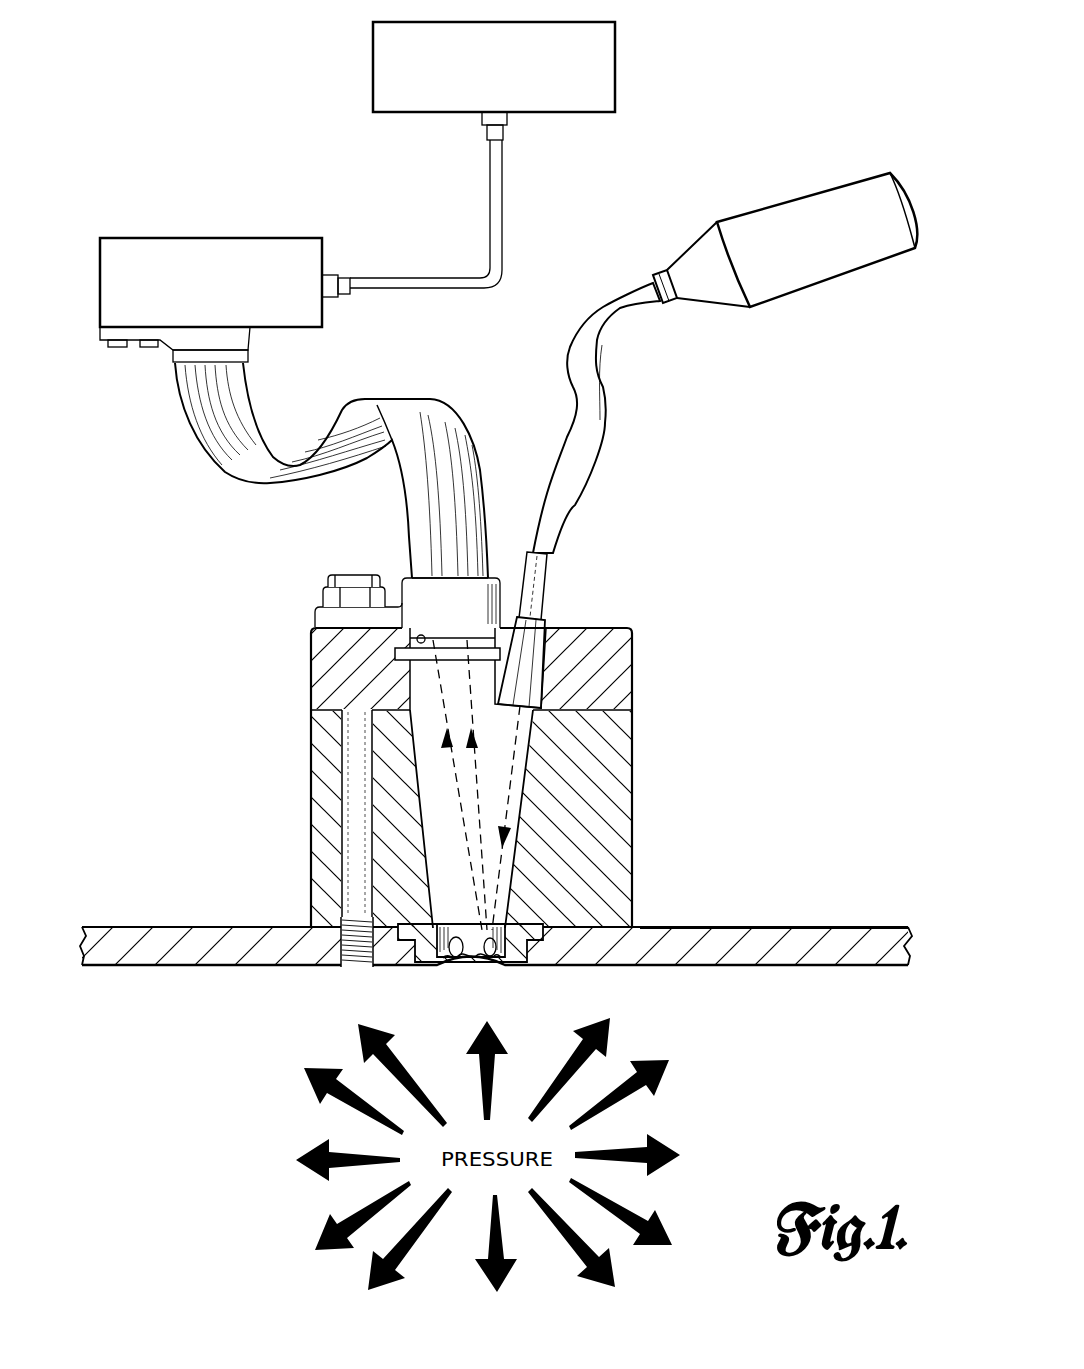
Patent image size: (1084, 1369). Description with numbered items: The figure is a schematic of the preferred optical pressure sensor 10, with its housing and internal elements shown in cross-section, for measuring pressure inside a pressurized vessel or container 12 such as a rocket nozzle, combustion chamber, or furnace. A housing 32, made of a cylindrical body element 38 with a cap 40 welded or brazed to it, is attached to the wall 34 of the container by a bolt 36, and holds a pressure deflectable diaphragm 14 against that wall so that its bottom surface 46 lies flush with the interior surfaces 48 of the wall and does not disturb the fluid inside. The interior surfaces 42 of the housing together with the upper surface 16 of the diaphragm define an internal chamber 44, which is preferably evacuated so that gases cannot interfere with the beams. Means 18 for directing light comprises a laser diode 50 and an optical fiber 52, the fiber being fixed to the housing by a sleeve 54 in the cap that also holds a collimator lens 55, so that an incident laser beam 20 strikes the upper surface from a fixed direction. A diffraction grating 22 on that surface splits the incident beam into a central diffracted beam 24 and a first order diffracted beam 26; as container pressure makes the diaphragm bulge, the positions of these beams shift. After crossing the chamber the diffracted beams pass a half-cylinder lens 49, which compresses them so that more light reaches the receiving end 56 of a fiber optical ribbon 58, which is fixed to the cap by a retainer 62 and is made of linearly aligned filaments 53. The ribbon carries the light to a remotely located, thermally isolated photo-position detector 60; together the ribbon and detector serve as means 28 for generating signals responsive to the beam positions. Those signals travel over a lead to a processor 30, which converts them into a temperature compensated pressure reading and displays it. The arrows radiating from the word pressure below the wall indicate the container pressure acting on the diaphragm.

The optical pressure sensor 10 is at (670, 527).
The pressurized vessel or container 12 is at (836, 908).
The pressure deflectable diaphragm 14 is at (421, 966).
The upper surface of diaphragm 16 is at (466, 966).
The means for directing an incident laser beam 18 is at (628, 422).
The incident laser beam 20 is at (500, 738).
The diffraction grating 22 is at (496, 966).
The central diffracted beam 24 is at (480, 800).
The first order diffracted beam 26 is at (470, 830).
The means for generating signals 28 is at (188, 492).
The processor 30 is at (615, 68).
The housing 32 is at (632, 728).
The wall of container 34 is at (700, 925).
The bolt 36 is at (320, 750).
The cylindrical body element 38 is at (340, 800).
The cap 40 is at (330, 665).
The interior surfaces 42 is at (360, 855).
The internal chamber 44 is at (632, 675).
The bottom surface of diaphragm 46 is at (475, 966).
The interior surfaces of wall 48 is at (295, 960).
The lens 49 is at (400, 690).
The laser diode 50 is at (818, 282).
The optical fiber 52 is at (607, 378).
The filaments 53 is at (487, 560).
The sleeve 54 is at (548, 600).
The collimator lens 55 is at (536, 632).
The receiving end 56 is at (415, 610).
The fiber optical ribbon 58 is at (405, 490).
The photo-position detector 60 is at (195, 238).
The retainer / lead 62 is at (502, 193).